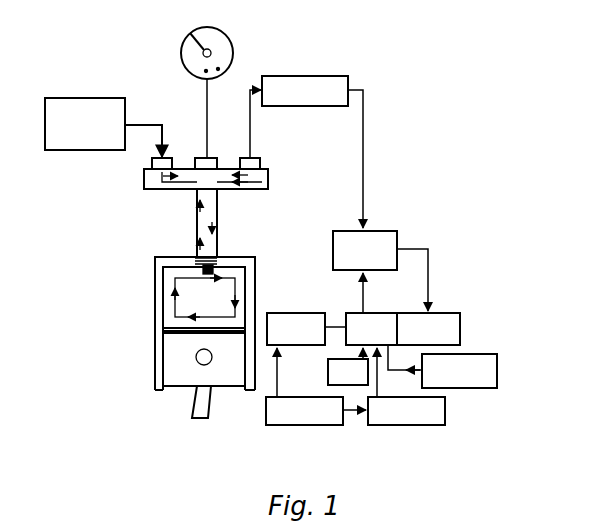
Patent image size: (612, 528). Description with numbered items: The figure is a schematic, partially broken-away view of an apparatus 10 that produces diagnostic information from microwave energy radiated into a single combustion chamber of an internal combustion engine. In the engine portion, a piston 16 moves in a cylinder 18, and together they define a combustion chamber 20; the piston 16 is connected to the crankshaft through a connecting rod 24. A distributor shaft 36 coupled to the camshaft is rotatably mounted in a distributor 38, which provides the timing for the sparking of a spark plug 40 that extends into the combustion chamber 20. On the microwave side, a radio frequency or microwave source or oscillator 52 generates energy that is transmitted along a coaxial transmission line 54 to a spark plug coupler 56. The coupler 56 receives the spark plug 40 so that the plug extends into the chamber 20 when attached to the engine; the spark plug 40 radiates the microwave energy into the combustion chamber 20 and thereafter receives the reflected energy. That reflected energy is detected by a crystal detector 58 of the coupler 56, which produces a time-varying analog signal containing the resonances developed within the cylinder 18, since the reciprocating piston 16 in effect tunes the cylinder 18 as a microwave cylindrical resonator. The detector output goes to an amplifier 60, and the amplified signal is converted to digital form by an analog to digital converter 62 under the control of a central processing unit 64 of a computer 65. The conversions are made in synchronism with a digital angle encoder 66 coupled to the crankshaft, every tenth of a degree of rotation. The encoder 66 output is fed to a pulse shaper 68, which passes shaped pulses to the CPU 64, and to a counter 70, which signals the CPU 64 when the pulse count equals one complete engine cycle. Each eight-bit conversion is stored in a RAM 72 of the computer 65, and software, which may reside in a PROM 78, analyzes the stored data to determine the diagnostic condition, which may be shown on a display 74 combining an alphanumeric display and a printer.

The apparatus 10 is at (412, 67).
The piston 16 is at (184, 385).
The cylinder 18 is at (150, 278).
The combustion chamber 20 is at (178, 313).
The connecting rod 24 is at (209, 405).
The distributor shaft 36 is at (180, 26).
The distributor 38 is at (232, 37).
The spark plug 40 is at (217, 265).
The microwave source 52 is at (70, 147).
The coaxial transmission line 54 is at (162, 122).
The spark plug coupler 56 is at (270, 178).
The crystal detector 58 is at (248, 157).
The amplifier 60 is at (310, 75).
The analog to digital converter 62 is at (373, 230).
The central processing unit 64 is at (372, 312).
The computer 65 is at (463, 328).
The digital angle encoder 66 is at (316, 426).
The pulse shaper 68 is at (308, 312).
The counter 70 is at (429, 426).
The RAM 72 is at (444, 312).
The display 74 is at (512, 370).
The PROM 78 is at (351, 386).